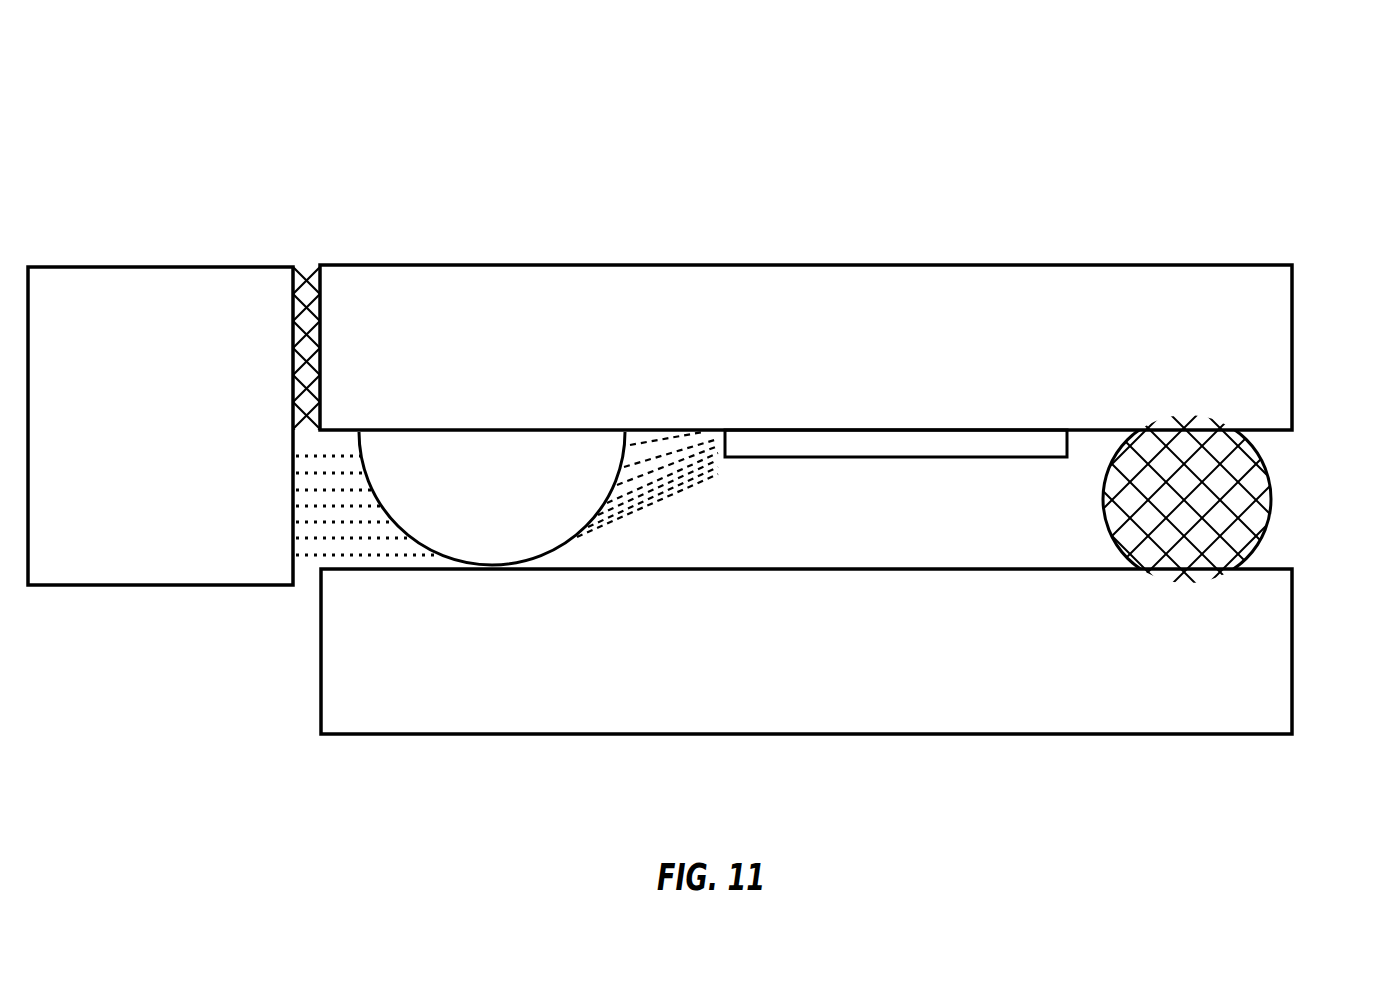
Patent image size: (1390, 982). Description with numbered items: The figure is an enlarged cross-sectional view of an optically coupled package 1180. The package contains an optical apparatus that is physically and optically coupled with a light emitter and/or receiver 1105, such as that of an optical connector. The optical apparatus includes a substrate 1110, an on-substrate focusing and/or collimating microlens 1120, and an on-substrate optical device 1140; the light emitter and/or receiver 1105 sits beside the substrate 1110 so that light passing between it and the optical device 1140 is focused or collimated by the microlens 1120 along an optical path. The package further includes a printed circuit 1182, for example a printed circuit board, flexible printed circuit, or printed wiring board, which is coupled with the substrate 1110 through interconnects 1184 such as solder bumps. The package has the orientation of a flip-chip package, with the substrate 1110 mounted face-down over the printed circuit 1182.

The optically coupled package 1180 is at (383, 130).
The light emitter and/or receiver 1105 is at (188, 520).
The substrate 1110 is at (835, 380).
The on-substrate focusing and/or collimating microlens 1120 is at (467, 544).
The on-substrate optical device 1140 is at (920, 457).
The printed circuit 1182 is at (835, 688).
The interconnects 1184 is at (1272, 500).